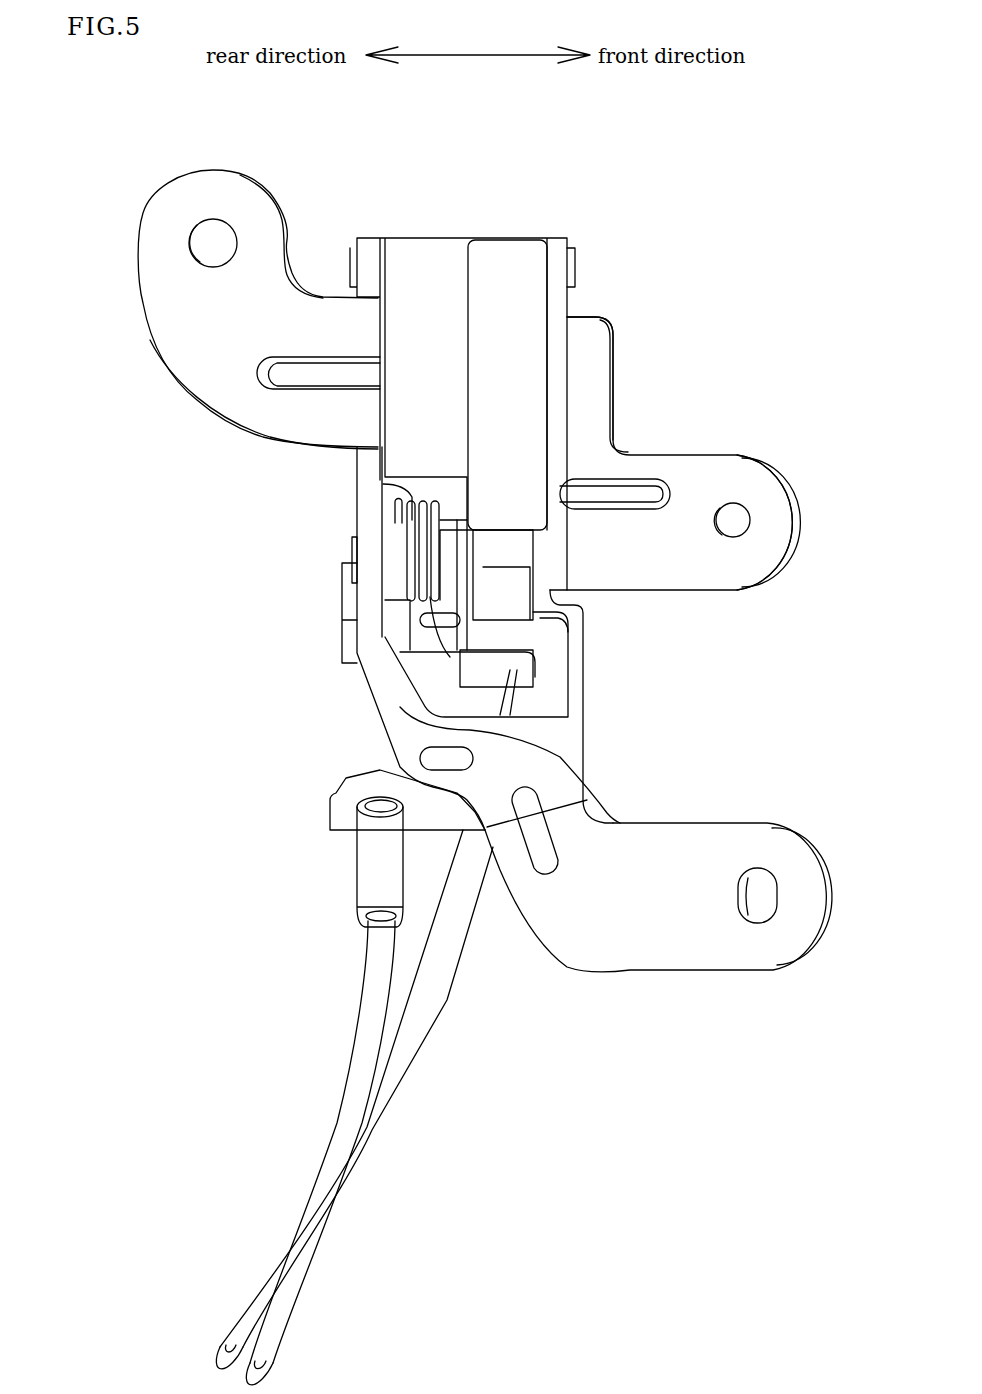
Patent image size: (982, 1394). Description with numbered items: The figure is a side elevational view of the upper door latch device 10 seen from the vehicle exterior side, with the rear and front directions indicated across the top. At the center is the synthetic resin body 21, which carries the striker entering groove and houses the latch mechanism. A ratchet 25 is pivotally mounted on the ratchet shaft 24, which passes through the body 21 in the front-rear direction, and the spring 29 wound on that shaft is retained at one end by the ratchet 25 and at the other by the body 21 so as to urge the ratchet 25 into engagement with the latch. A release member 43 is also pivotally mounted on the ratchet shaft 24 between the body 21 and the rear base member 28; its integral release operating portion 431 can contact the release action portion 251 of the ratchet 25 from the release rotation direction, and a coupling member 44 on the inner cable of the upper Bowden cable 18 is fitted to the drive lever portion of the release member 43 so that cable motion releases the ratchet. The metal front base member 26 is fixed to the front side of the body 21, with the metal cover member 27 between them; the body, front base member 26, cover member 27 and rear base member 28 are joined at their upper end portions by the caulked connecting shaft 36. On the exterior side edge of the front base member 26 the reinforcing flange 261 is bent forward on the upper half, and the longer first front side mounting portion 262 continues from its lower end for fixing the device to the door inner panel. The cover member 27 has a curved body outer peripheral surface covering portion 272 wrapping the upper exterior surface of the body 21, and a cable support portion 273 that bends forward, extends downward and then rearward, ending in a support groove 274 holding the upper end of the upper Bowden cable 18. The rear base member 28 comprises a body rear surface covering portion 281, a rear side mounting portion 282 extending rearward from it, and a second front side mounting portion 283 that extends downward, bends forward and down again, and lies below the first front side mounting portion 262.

The upper door latch device 10 is at (762, 295).
The upper Bowden cable 18 is at (363, 1002).
The body 21 is at (435, 262).
The ratchet shaft 24 is at (395, 573).
The ratchet 25 is at (558, 635).
The front base member 26 is at (708, 610).
The cover member 27 is at (609, 680).
The rear base member 28 is at (336, 521).
The spring 29 is at (383, 484).
The connecting shaft 36 is at (573, 266).
The release member 43 is at (462, 549).
The coupling member 44 is at (345, 644).
The release action portion 251 is at (513, 667).
The reinforcing flange 261 is at (612, 370).
The first front side mounting portion 262 is at (740, 455).
The body outer peripheral surface covering portion 272 is at (505, 265).
The cable support portion 273 is at (372, 783).
The support groove 274 is at (357, 792).
The body rear surface covering portion 281 is at (375, 604).
The rear side mounting portion 282 is at (143, 305).
The second front side mounting portion 283 is at (720, 973).
The release operating portion 431 is at (470, 660).